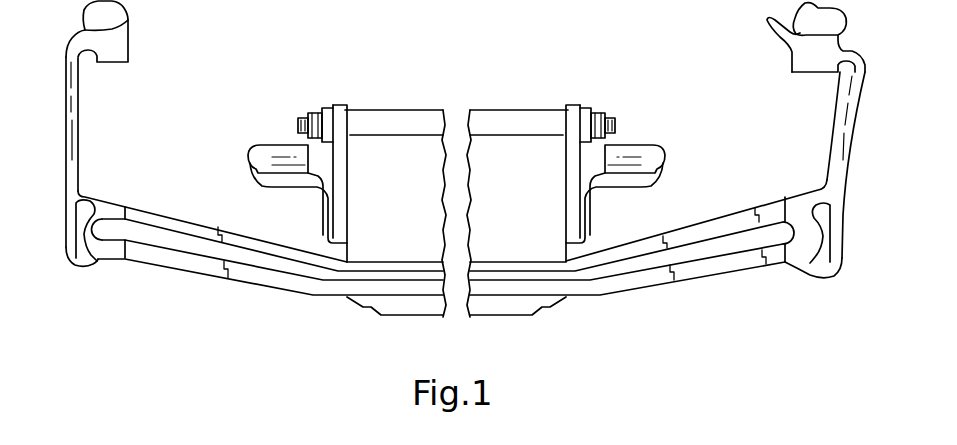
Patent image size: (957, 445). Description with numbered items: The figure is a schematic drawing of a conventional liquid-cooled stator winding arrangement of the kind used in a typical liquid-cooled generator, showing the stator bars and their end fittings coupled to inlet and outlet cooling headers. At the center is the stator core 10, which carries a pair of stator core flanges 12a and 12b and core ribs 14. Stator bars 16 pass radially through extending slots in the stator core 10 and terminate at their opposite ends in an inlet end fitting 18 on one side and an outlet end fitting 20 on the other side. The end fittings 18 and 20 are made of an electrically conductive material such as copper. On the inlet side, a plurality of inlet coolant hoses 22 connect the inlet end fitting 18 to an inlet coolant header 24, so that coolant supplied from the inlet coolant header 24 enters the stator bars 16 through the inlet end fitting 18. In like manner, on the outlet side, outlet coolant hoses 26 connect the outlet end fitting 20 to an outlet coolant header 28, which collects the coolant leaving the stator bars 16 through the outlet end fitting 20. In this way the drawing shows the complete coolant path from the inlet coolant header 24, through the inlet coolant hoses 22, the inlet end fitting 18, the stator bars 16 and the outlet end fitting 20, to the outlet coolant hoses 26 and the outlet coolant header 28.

The stator core 10 is at (490, 309).
The stator core flange 12a is at (578, 112).
The stator core flange 12b is at (340, 114).
The core ribs 14 is at (513, 122).
The stator bars 16 is at (680, 275).
The inlet end fitting 18 is at (820, 232).
The outlet end fitting 20 is at (108, 256).
The inlet coolant hoses 22 is at (849, 112).
The inlet coolant header 24 is at (807, 65).
The outlet coolant hoses 26 is at (67, 112).
The outlet coolant header 28 is at (117, 52).